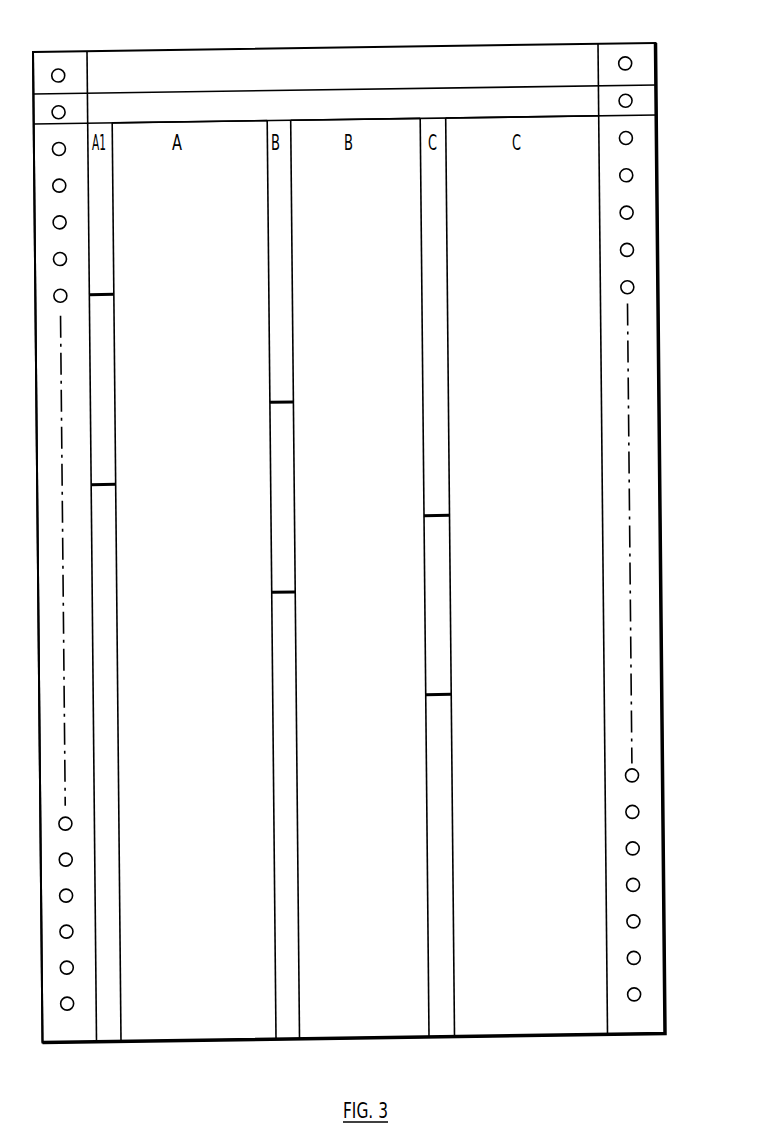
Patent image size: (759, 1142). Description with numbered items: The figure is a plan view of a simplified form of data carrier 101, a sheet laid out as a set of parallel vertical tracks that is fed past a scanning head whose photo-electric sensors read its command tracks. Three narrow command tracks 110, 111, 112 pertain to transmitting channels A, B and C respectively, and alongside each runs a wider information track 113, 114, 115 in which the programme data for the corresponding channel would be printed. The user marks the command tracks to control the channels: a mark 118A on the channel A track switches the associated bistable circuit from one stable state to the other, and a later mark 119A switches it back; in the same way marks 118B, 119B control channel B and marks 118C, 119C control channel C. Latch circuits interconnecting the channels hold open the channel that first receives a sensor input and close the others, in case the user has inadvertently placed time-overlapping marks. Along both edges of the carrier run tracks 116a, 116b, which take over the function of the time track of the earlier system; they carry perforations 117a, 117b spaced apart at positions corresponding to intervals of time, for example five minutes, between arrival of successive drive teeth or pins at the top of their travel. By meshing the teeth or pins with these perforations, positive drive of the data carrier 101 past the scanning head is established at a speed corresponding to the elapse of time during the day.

The data carrier 101 is at (474, 38).
The command track 110 is at (117, 1044).
The command track 111 is at (285, 1042).
The command track 112 is at (442, 1040).
The information track 113 is at (206, 1044).
The information track 114 is at (376, 1040).
The information track 115 is at (538, 1038).
The track 116a is at (105, 1074).
The track 116b is at (634, 1038).
The perforation 117a is at (68, 862).
The perforation 117b is at (627, 772).
The mark 118A is at (111, 292).
The mark 119A is at (101, 485).
The mark 118B is at (290, 401).
The mark 119B is at (291, 591).
The mark 118C is at (447, 515).
The mark 119C is at (470, 678).